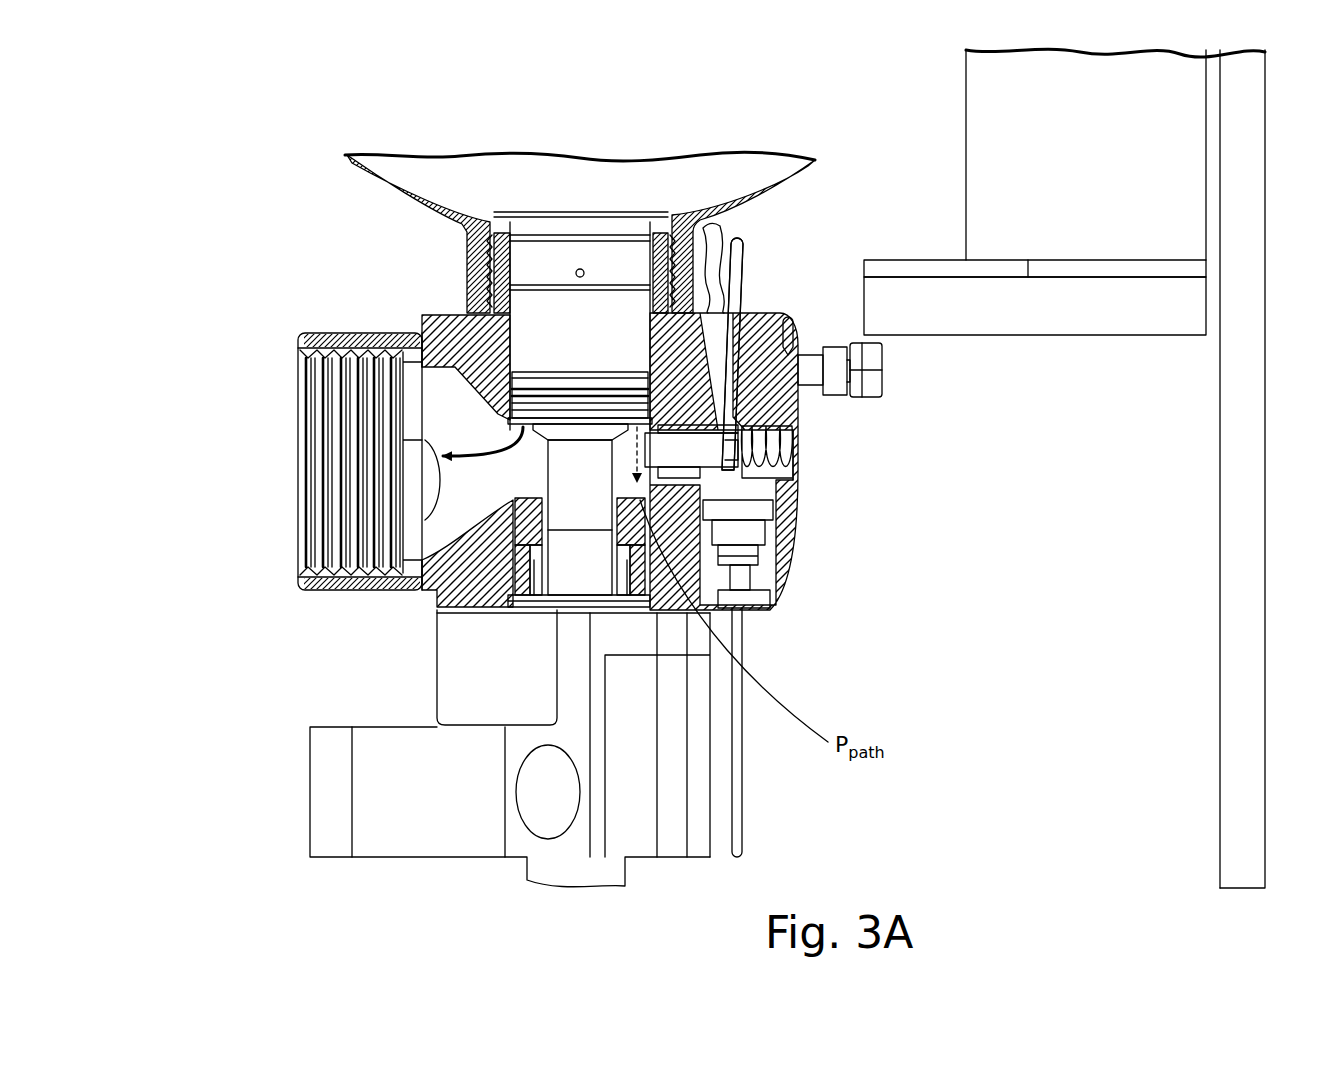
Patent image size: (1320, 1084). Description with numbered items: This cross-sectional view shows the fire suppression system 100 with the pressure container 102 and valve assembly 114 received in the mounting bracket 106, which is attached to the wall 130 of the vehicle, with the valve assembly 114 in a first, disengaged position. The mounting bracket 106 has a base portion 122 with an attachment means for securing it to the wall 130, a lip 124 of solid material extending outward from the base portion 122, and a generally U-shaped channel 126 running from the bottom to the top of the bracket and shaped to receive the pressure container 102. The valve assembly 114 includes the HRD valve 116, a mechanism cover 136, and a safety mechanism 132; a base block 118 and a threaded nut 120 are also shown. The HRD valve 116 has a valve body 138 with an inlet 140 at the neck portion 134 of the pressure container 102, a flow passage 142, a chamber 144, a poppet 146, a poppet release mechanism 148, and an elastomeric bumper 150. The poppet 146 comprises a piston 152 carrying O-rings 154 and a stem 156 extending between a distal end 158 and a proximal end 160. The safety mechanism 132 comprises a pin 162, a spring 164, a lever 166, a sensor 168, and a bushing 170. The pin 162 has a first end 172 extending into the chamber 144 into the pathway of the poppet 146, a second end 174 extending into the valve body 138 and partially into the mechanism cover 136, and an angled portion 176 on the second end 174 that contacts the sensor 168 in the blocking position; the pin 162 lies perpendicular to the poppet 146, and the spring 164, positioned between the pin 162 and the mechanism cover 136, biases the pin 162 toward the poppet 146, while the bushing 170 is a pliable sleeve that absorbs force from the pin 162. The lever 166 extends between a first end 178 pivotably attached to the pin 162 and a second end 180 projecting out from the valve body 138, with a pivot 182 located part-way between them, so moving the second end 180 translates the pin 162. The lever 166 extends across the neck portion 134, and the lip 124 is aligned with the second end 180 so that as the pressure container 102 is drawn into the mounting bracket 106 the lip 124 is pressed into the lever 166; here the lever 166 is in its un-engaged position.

The fire suppression system 100 is at (213, 204).
The pressure container 102 is at (392, 200).
The mounting bracket 106 is at (1110, 342).
The valve assembly 114 is at (348, 328).
The HRD valve 116 is at (433, 606).
The base block 118 is at (515, 600).
The threaded nut 120 is at (313, 337).
The base portion 122 is at (1220, 345).
The lip 124 is at (903, 260).
The channel 126 is at (966, 140).
The wall 130 is at (1220, 524).
The safety mechanism 132 is at (793, 452).
The neck portion 134 is at (712, 226).
The mechanism cover 136 is at (772, 482).
The valve body 138 is at (470, 312).
The inlet 140 is at (497, 265).
The flow passage 142 is at (548, 447).
The chamber 144 is at (635, 565).
The poppet 146 is at (536, 470).
The poppet release mechanism 148 is at (587, 497).
The elastomeric bumper 150 is at (522, 540).
The piston 152 is at (563, 372).
The O-rings 154 is at (560, 392).
The stem 156 is at (537, 517).
The distal end 158 is at (535, 418).
The proximal end 160 is at (520, 570).
The pin 162 is at (735, 404).
The spring 164 is at (730, 464).
The lever 166 is at (742, 292).
The sensor 168 is at (762, 568).
The bushing 170 is at (772, 392).
The first end 172 is at (757, 592).
The second end 174 is at (768, 520).
The angled portion 176 is at (762, 540).
The first end 178 is at (750, 492).
The second end 180 is at (744, 252).
The pivot 182 is at (752, 337).